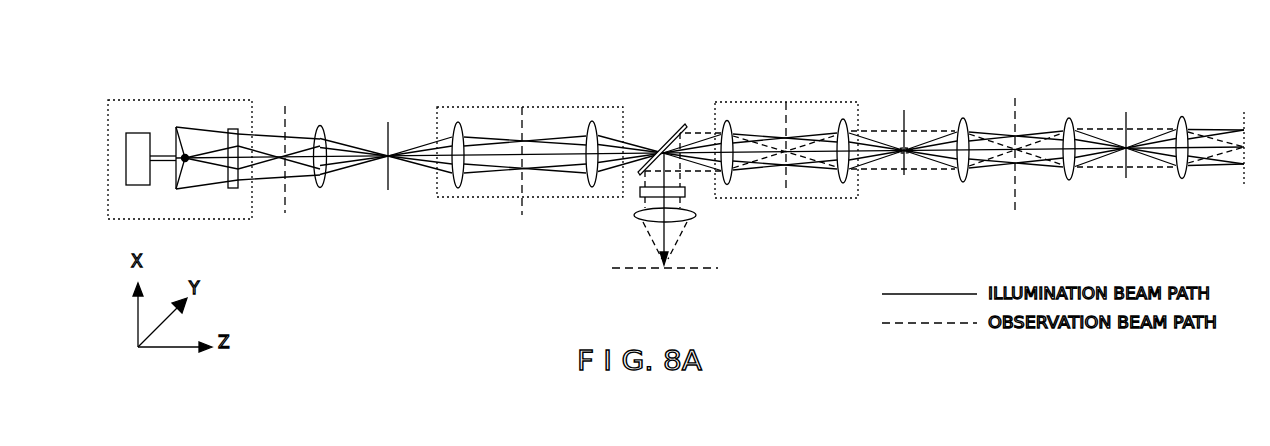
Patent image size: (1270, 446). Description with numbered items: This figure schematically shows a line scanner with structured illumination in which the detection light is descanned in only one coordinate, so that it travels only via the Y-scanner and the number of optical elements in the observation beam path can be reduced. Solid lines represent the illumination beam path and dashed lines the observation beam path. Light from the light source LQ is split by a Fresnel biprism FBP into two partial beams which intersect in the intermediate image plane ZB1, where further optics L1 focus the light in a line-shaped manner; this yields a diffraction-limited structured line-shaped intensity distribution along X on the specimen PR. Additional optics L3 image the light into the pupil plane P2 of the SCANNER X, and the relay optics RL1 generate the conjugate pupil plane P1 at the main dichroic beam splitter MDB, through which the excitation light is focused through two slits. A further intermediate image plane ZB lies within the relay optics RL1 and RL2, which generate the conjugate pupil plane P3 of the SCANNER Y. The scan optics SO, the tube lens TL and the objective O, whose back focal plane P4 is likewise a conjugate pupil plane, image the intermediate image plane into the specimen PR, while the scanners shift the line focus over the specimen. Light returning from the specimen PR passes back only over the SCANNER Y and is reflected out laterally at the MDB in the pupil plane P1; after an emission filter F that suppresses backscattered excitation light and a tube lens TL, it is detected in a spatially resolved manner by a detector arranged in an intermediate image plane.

The light source LQ is at (180, 159).
The Fresnel biprism FBP is at (179, 170).
The optics L1 is at (211, 170).
The intermediate image plane ZB1 is at (288, 141).
The optics L3 is at (283, 142).
The X-scanner SCANNER X is at (394, 73).
The pupil plane P2 is at (386, 143).
The relay optics RL1 is at (530, 152).
The intermediate image plane ZB is at (770, 146).
The pupil plane P1 is at (659, 118).
The main dichroic beam splitter MDB is at (679, 178).
The emission filter F is at (674, 194).
The tube lens TL is at (858, 168).
The relay optics RL2 is at (786, 150).
The Y-scanner SCANNER Y is at (908, 56).
The pupil plane P3 is at (903, 130).
The scan optics SO is at (965, 133).
The back focal plane of the objective P4 is at (1125, 128).
The objective O is at (1210, 128).
The specimen PR is at (1244, 131).